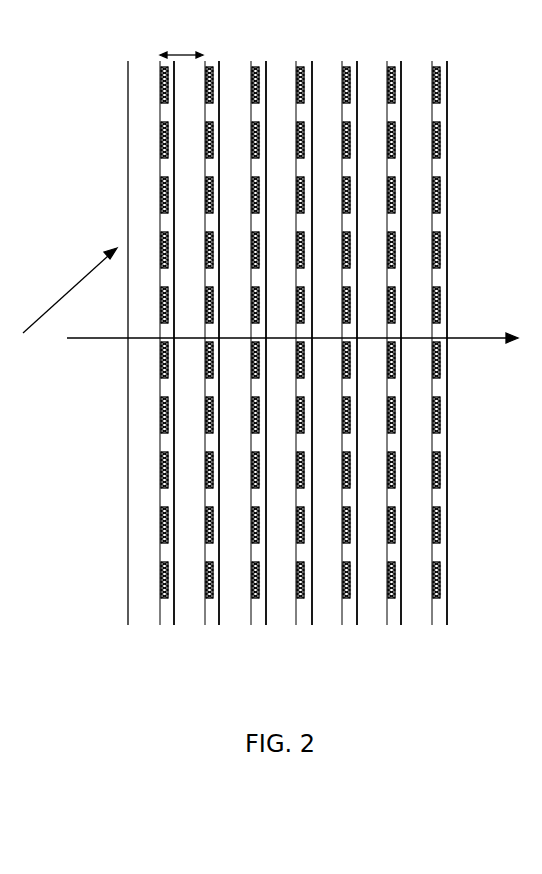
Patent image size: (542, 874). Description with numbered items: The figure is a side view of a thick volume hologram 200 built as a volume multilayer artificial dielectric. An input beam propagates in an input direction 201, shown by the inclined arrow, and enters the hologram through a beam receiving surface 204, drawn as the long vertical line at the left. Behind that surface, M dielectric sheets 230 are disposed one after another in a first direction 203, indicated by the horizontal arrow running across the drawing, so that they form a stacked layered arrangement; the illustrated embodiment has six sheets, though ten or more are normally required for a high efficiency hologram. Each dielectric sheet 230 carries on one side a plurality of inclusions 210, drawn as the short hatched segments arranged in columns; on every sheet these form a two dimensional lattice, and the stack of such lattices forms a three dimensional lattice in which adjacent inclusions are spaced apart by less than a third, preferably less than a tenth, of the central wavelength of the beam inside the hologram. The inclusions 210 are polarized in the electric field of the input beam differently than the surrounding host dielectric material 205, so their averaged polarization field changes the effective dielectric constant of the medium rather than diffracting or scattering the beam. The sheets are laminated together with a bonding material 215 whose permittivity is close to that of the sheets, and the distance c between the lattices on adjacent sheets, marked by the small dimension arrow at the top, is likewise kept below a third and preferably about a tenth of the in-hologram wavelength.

The thick volume hologram 200 is at (269, 352).
The input direction 201 is at (73, 283).
The first direction 203 is at (467, 338).
The beam receiving surface 204 is at (125, 114).
The host dielectric material 205 is at (130, 434).
The inclusions 210 is at (158, 595).
The bonding material 215 is at (163, 503).
The dielectric sheets 230 is at (230, 612).
The distance between 2D lattices on adjacent sheets c is at (181, 46).